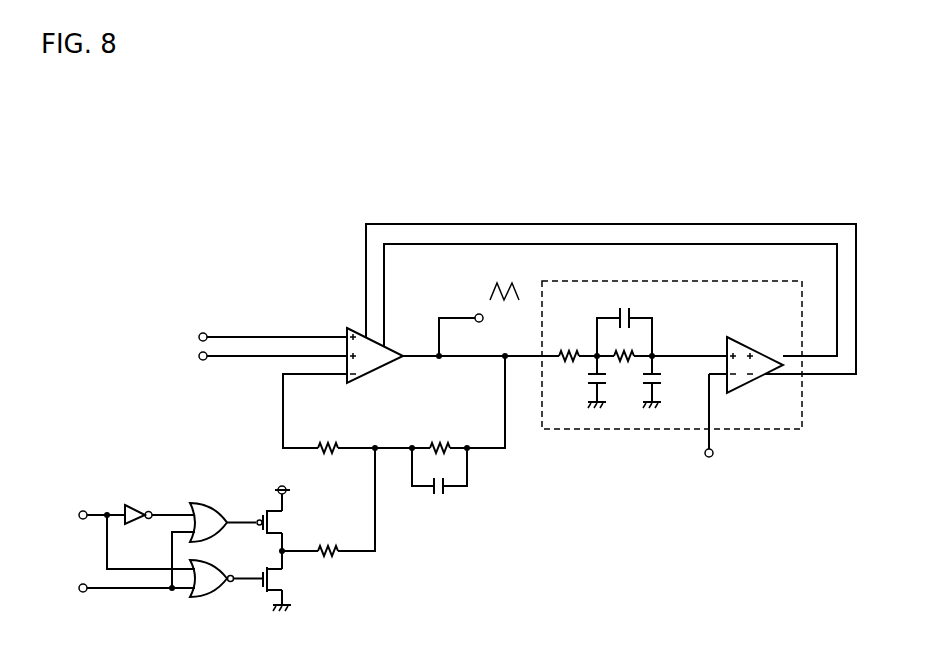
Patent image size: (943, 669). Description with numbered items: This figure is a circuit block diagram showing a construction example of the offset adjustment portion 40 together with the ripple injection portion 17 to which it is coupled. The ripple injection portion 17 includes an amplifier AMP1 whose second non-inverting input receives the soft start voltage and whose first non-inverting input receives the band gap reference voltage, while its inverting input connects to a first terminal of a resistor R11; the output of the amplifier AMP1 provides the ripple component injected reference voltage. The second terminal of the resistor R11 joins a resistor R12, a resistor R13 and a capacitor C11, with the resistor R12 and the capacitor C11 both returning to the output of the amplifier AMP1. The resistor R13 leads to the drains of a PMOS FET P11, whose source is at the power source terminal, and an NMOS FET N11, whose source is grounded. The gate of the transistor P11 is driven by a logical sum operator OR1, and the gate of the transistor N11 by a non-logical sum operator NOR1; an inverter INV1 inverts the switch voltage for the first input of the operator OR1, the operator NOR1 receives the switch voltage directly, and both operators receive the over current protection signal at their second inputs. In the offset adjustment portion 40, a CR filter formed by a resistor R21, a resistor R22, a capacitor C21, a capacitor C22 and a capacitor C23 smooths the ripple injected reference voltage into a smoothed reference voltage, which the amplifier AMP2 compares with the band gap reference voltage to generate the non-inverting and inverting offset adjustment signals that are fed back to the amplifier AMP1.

The ripple injection portion 17 is at (118, 282).
The offset adjustment portion 40 is at (669, 281).
The amplifier AMP1 is at (373, 377).
The amplifier AMP2 is at (751, 347).
The resistor R11 is at (328, 441).
The resistor R12 is at (440, 441).
The resistor R13 is at (338, 556).
The capacitor C11 is at (439, 497).
The resistor R21 is at (570, 348).
The resistor R22 is at (622, 362).
The capacitor C21 is at (589, 380).
The capacitor C22 is at (664, 380).
The capacitor C23 is at (637, 311).
The inverter INV1 is at (136, 504).
The logical sum operator OR1 is at (210, 504).
The non-logical sum operator NOR1 is at (208, 599).
The PMOS FET P11 is at (292, 518).
The NMOS FET N11 is at (296, 581).